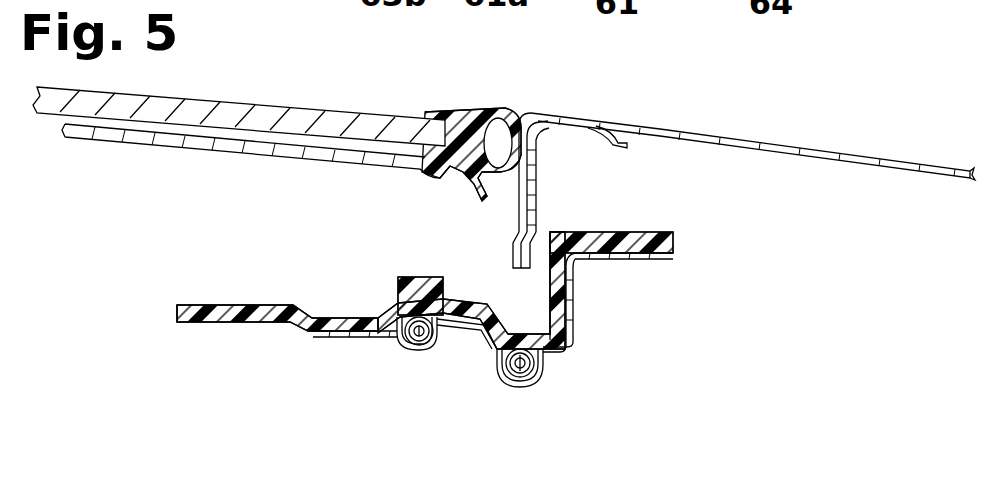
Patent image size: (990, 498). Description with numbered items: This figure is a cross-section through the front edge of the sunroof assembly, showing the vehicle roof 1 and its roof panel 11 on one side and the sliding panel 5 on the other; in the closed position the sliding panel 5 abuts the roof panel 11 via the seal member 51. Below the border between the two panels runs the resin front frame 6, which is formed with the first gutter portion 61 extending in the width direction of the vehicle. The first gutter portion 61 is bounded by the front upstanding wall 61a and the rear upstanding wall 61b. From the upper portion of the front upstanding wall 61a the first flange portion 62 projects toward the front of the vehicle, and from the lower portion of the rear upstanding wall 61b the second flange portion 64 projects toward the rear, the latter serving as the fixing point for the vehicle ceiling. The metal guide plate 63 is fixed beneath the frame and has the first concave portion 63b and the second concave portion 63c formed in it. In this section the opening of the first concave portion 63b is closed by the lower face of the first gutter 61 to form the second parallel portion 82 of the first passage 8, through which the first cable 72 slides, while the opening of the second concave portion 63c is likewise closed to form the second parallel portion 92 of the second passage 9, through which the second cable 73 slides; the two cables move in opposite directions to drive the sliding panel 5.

The vehicle roof 1 is at (866, 144).
The roof panel 11 is at (738, 137).
The sliding panel 5 is at (261, 108).
The seal member 51 is at (475, 110).
The front frame 6 is at (241, 291).
The second flange portion 64 is at (252, 314).
The first gutter portion 61 is at (458, 325).
The front upstanding wall 61a is at (557, 300).
The rear upstanding wall 61b is at (408, 276).
The first flange portion 62 is at (642, 242).
The guide plate 63 is at (586, 357).
The first concave portion 63b is at (502, 373).
The second concave portion 63c is at (397, 332).
The second cable 73 is at (428, 300).
The second passage 9 is at (399, 355).
The second parallel portion of the second right passage 92 is at (413, 350).
The first cable 72 is at (520, 370).
The first passage 8 is at (537, 396).
The second parallel portion of the first right passage 82 is at (542, 370).